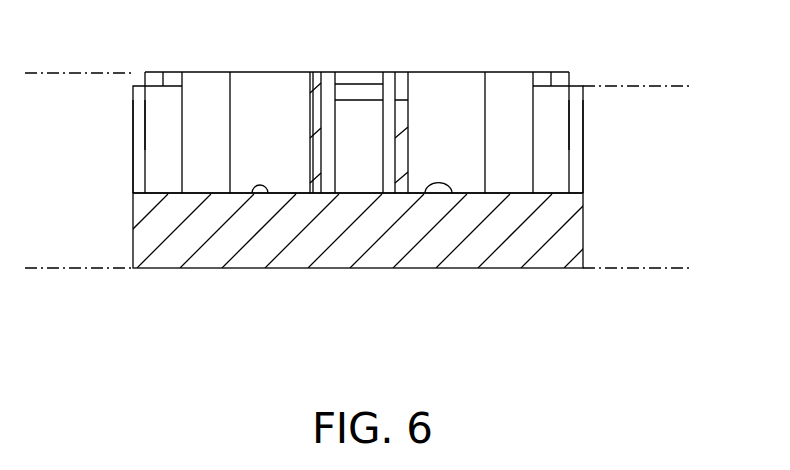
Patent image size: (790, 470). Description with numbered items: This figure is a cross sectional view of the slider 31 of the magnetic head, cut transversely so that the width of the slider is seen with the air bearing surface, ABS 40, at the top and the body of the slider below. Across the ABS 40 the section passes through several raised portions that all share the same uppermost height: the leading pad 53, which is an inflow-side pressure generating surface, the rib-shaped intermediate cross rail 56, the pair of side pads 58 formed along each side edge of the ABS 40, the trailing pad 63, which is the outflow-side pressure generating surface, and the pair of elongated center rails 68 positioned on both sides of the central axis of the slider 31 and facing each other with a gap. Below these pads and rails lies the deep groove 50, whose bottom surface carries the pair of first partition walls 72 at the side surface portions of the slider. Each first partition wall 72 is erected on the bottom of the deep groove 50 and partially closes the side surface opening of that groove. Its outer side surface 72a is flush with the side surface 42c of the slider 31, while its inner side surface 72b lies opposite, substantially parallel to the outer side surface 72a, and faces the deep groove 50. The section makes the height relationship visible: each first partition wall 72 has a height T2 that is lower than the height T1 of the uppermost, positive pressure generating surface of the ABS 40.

The slider 31 is at (185, 250).
The ABS 40 is at (490, 71).
The side surface 42c is at (133, 207).
The deep groove 50 is at (263, 197).
The leading pad 53 is at (193, 72).
The intermediate cross rail 56 is at (262, 72).
The side pad 58 is at (155, 72).
The trailing pad 63 is at (360, 72).
The center rail 68 is at (317, 72).
The first partition wall 72 is at (133, 145).
The outer side surface 72a is at (133, 112).
The inner side surface 72b is at (145, 128).
The height of uppermost surface of ABS T1 is at (42, 73).
The height of first partition wall T2 is at (675, 86).